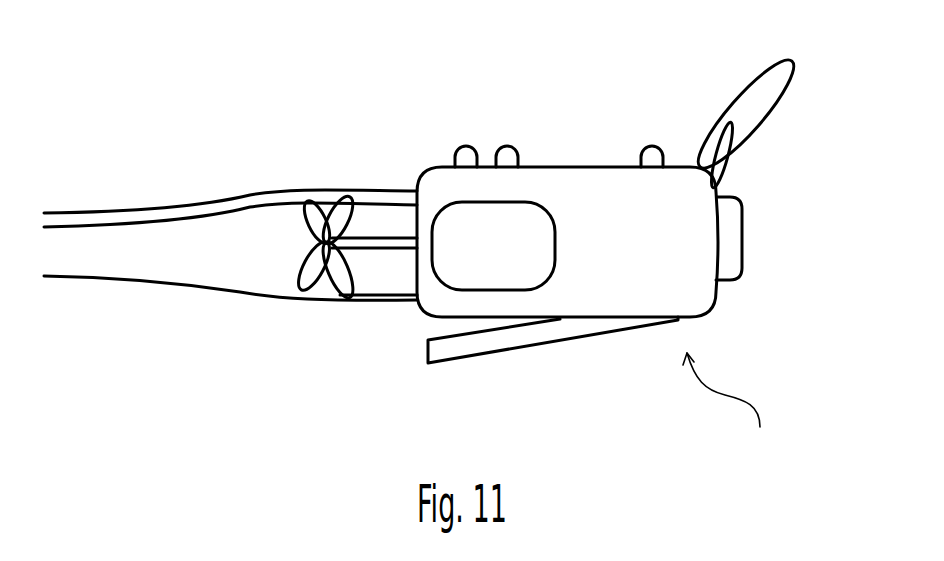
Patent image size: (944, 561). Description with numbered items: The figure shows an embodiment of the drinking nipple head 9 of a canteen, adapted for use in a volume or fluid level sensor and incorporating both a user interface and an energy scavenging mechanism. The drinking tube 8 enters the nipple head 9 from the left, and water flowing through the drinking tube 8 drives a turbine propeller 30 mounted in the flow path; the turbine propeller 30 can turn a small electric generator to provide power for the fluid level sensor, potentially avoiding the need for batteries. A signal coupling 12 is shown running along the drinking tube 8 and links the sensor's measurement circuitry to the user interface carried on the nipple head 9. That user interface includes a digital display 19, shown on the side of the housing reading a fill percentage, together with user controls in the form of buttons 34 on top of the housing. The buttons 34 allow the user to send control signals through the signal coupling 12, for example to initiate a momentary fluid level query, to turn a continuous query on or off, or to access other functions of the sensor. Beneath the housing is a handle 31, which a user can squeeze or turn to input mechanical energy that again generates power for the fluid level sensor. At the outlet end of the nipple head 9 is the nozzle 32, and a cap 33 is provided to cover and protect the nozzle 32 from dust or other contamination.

The drinking tube 8 is at (177, 285).
The signal coupling 12 is at (40, 227).
The turbine propeller 30 is at (305, 210).
The buttons 34 is at (485, 131).
The digital display 19 is at (555, 247).
The cap 33 is at (745, 113).
The nozzle 32 is at (733, 280).
The handle 31 is at (578, 340).
The nipple head 9 is at (725, 419).